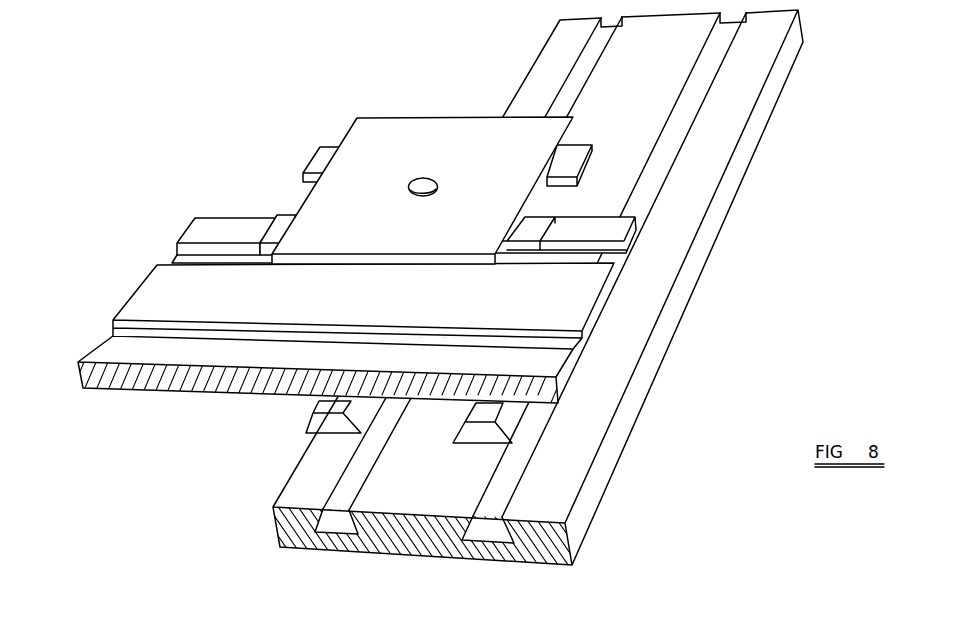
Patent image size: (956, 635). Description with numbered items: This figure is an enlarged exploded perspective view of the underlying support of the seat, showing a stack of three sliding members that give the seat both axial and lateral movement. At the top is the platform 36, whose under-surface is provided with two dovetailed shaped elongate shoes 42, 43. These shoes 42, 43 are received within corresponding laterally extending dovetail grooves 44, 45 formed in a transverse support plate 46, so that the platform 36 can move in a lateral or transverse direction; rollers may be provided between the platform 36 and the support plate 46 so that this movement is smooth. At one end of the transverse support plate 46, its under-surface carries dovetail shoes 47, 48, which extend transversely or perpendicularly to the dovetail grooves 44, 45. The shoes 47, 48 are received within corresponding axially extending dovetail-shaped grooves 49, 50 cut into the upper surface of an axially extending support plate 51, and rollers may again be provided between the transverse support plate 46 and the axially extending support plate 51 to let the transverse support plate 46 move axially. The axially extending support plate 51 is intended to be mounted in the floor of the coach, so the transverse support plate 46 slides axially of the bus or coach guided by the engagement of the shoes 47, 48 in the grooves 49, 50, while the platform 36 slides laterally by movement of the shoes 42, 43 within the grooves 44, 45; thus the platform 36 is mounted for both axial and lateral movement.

The platform 36 is at (408, 146).
The dovetailed shaped elongate shoe 42 is at (314, 156).
The dovetailed shaped elongate shoe 43 is at (282, 238).
The dovetail groove 44 is at (173, 254).
The dovetail groove 45 is at (111, 334).
The transverse support plate 46 is at (224, 240).
The dovetail shoe 47 is at (322, 402).
The dovetail shoe 48 is at (478, 415).
The dovetail-shaped groove 49 is at (343, 516).
The dovetail-shaped groove 50 is at (492, 518).
The axially extending support plate 51 is at (590, 492).